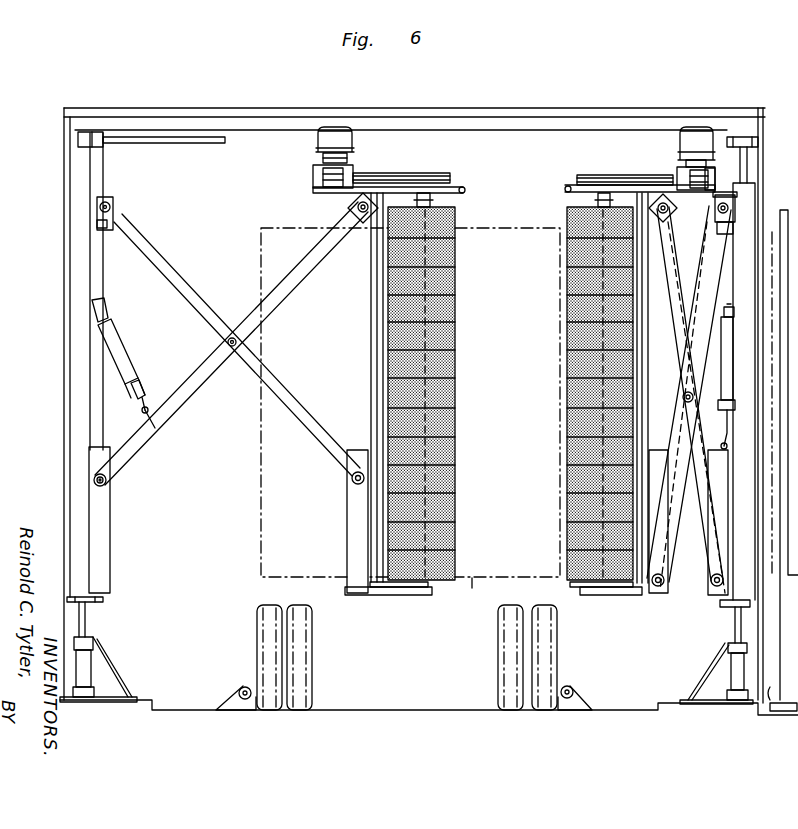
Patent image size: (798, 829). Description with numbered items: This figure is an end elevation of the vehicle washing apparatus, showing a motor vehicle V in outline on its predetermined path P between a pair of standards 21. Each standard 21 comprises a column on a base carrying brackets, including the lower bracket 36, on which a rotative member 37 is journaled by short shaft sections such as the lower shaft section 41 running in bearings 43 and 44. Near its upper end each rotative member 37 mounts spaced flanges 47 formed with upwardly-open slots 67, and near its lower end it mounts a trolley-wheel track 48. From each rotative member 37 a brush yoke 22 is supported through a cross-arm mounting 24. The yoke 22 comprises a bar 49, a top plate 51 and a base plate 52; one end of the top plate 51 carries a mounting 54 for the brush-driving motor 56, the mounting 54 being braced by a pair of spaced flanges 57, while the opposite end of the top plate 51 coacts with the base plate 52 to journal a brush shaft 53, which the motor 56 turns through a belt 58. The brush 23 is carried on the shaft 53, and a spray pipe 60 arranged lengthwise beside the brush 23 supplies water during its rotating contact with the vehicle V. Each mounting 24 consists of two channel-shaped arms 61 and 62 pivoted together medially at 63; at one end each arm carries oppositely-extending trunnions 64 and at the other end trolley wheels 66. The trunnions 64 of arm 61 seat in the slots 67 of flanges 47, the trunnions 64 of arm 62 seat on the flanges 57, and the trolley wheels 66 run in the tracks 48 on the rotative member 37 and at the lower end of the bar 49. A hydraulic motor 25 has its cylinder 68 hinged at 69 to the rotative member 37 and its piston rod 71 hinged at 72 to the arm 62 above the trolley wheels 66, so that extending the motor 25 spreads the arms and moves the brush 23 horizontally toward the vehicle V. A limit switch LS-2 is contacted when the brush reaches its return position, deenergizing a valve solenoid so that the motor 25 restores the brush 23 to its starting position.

The standard 21 is at (64, 350).
The yoke 22 is at (654, 369).
The brush 23 is at (566, 303).
The cross-arm mounting 24 is at (459, 466).
The hydraulic motor 25 is at (713, 357).
The bracket 36 is at (720, 608).
The rotative member 37 is at (746, 391).
The shaft section 41 is at (748, 170).
The bearing 43 is at (745, 142).
The bearing 44 is at (737, 596).
The flange 47 is at (688, 180).
The trolley-wheel track 48 is at (672, 560).
The bar 49 is at (652, 446).
The top plate 51 is at (567, 185).
The base plate 52 is at (591, 595).
The brush shaft 53 is at (598, 196).
The mounting 54 is at (712, 172).
The brush-driving motor 56 is at (702, 142).
The flange 57 is at (672, 218).
The belt 58 is at (598, 175).
The spray pipe 60 is at (566, 336).
The arm 61 is at (138, 443).
The arm 62 is at (672, 262).
The pivot 63 is at (684, 390).
The trunnion 64 is at (714, 211).
The trolley wheel 66 is at (108, 481).
The slot 67 is at (730, 198).
The cylinder 68 is at (722, 333).
The hinge 69 is at (731, 309).
The piston rod 71 is at (722, 440).
The hinge 72 is at (150, 416).
The limit switch LS-2 is at (732, 222).
The vehicle V is at (470, 593).
The path P is at (423, 697).